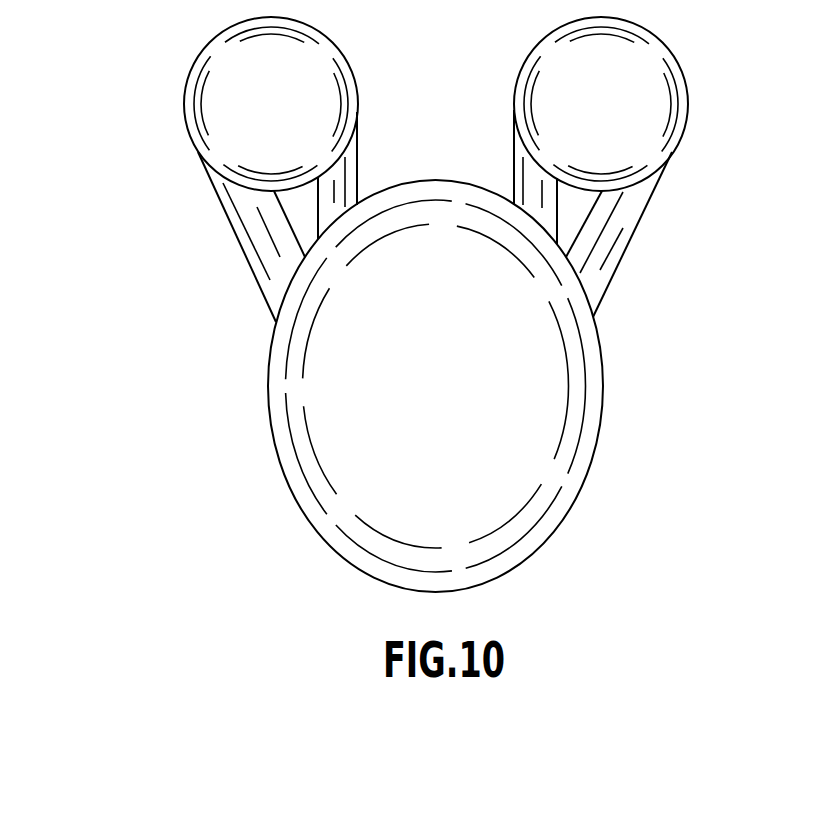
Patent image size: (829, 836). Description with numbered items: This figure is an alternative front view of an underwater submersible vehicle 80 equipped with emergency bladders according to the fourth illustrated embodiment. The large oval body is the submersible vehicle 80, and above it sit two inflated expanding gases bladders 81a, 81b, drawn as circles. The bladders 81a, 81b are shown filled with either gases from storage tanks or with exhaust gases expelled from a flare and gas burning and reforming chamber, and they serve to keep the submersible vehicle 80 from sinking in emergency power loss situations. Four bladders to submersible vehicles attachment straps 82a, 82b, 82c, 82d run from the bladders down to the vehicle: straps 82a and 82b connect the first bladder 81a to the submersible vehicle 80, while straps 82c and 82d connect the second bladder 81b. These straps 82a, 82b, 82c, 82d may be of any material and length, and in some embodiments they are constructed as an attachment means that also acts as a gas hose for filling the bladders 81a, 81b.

The submersible vehicle 80 is at (609, 414).
The expanding gases bladders system 81a is at (195, 48).
The expanding gases bladders system 81b is at (681, 62).
The bladders to submersible vehicles attachment strap 82a is at (217, 218).
The bladders to submersible vehicles attachment strap 82b is at (363, 176).
The bladders to submersible vehicles attachment strap 82c is at (507, 179).
The bladders to submersible vehicles attachment strap 82d is at (644, 229).